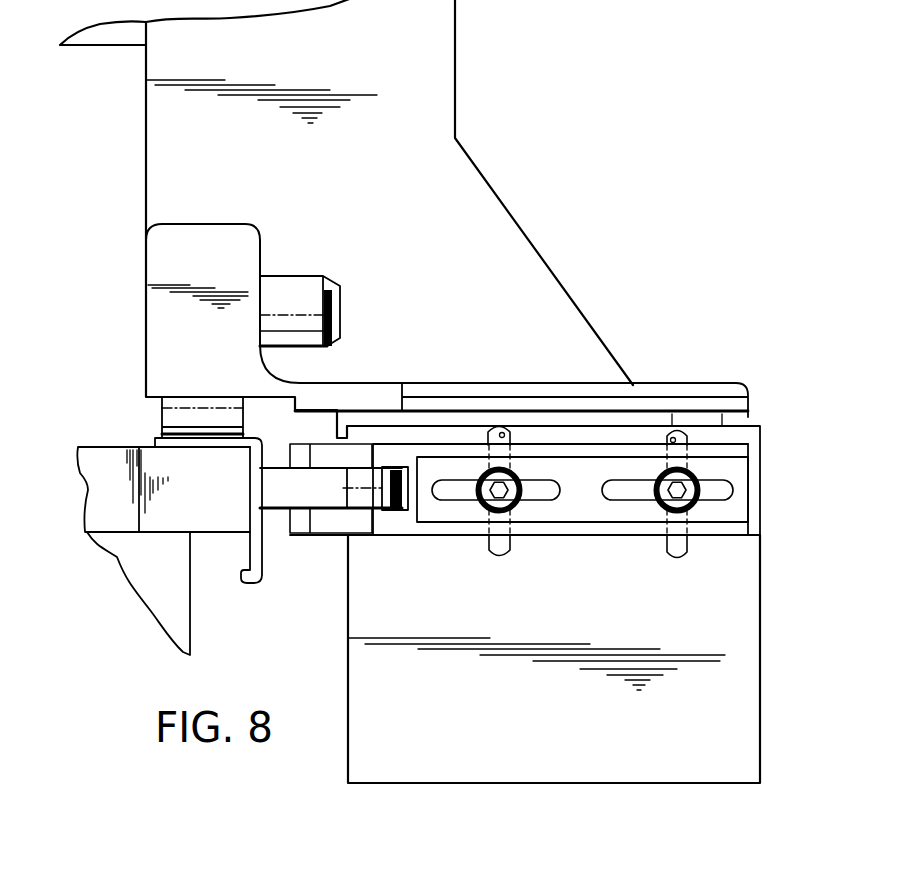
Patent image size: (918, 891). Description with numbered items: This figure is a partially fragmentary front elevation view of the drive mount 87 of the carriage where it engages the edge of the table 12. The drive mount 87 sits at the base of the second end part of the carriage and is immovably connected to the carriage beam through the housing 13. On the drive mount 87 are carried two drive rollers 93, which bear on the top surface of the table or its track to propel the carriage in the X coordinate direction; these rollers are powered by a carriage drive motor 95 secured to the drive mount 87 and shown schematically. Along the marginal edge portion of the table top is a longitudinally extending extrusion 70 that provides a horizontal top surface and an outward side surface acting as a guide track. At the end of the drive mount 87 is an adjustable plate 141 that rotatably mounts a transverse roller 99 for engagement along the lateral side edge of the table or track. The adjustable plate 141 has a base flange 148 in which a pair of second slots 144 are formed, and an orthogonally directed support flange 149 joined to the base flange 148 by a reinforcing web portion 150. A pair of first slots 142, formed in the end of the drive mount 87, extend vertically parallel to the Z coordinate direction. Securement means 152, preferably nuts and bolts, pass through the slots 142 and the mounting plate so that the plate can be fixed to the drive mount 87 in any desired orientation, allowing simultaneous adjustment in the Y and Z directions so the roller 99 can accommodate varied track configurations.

The table 12 is at (95, 453).
The housing 13 is at (437, 128).
The extrusion 70 is at (263, 455).
The drive mount 87 is at (787, 398).
The drive roller 93 is at (162, 419).
The carriage drive motor 95 is at (322, 276).
The transverse roller 99 is at (279, 497).
The adjustable plate 141 is at (764, 505).
The first slot 142 is at (498, 432).
The second slot 144 is at (543, 492).
The base flange 148 is at (737, 474).
The support flange 149 is at (420, 497).
The reinforcing web portion 150 is at (737, 443).
The securement means 152 is at (522, 512).